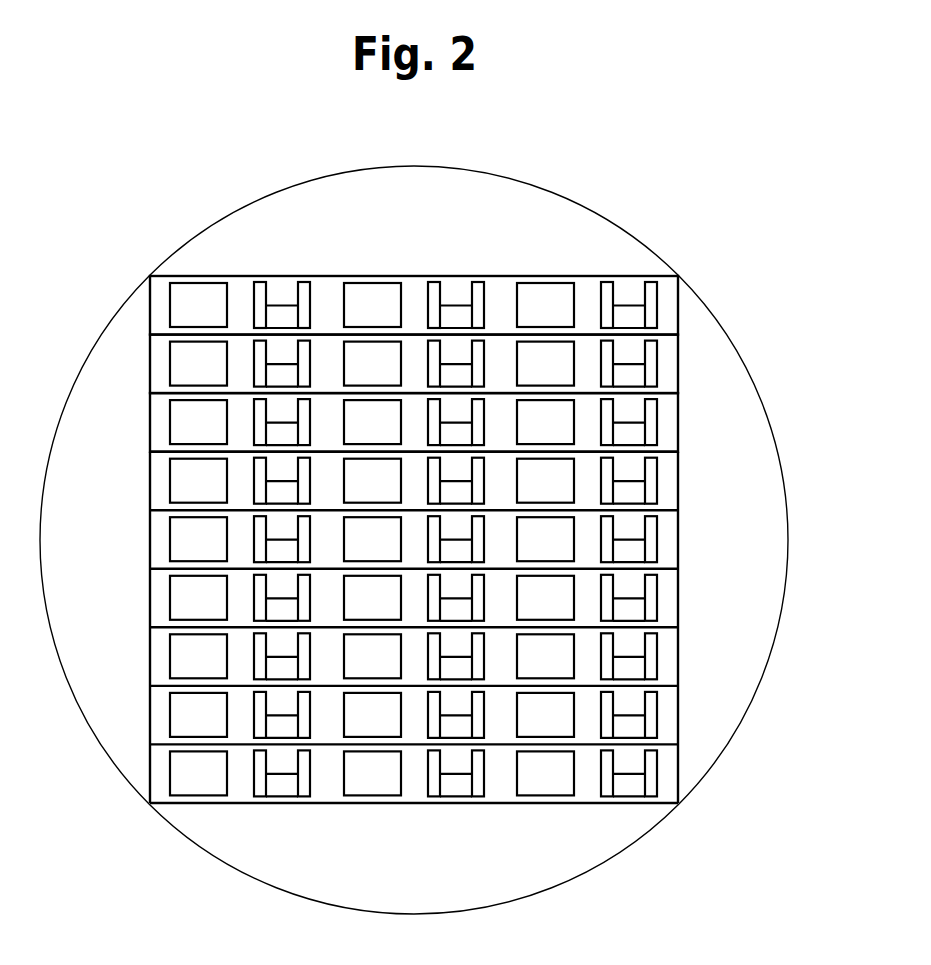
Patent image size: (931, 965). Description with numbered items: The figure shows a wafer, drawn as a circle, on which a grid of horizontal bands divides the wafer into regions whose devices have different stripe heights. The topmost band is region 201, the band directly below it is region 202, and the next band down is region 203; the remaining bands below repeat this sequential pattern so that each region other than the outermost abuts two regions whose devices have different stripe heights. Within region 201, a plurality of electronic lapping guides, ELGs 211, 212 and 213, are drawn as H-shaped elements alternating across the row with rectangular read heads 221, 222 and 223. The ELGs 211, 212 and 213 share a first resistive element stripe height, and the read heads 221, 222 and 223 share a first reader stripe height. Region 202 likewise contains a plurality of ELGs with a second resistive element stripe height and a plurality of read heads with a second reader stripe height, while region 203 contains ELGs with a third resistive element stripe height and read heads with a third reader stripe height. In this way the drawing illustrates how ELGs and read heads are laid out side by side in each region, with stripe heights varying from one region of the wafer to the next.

The region 201 is at (678, 303).
The region 202 is at (678, 363).
The region 203 is at (678, 417).
The ELG 211 is at (266, 283).
The ELG 212 is at (440, 283).
The ELG 213 is at (612, 283).
The read head 221 is at (220, 318).
The read head 222 is at (394, 318).
The read head 223 is at (567, 318).